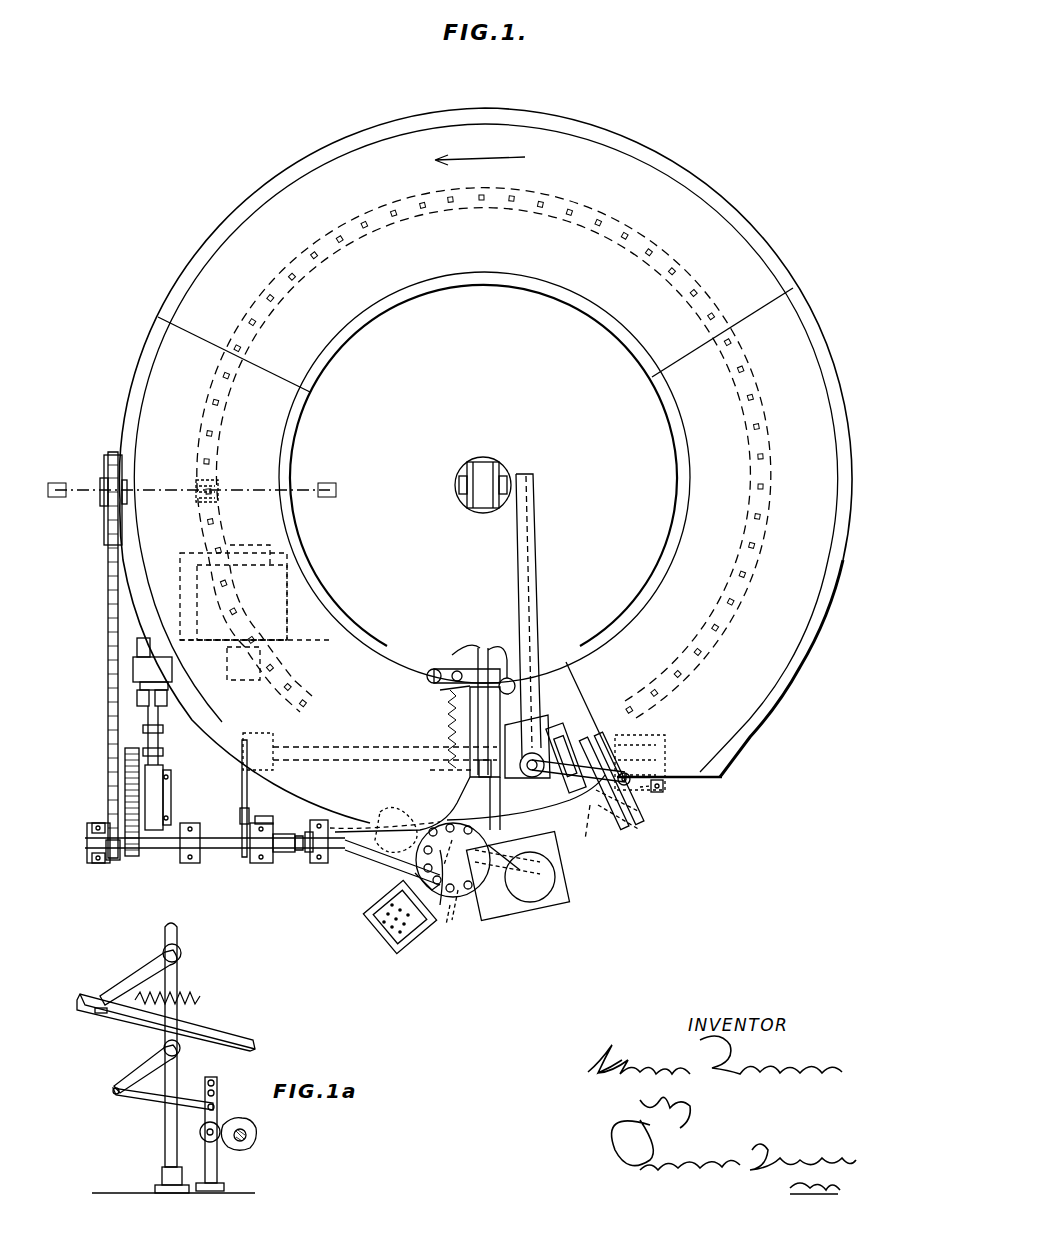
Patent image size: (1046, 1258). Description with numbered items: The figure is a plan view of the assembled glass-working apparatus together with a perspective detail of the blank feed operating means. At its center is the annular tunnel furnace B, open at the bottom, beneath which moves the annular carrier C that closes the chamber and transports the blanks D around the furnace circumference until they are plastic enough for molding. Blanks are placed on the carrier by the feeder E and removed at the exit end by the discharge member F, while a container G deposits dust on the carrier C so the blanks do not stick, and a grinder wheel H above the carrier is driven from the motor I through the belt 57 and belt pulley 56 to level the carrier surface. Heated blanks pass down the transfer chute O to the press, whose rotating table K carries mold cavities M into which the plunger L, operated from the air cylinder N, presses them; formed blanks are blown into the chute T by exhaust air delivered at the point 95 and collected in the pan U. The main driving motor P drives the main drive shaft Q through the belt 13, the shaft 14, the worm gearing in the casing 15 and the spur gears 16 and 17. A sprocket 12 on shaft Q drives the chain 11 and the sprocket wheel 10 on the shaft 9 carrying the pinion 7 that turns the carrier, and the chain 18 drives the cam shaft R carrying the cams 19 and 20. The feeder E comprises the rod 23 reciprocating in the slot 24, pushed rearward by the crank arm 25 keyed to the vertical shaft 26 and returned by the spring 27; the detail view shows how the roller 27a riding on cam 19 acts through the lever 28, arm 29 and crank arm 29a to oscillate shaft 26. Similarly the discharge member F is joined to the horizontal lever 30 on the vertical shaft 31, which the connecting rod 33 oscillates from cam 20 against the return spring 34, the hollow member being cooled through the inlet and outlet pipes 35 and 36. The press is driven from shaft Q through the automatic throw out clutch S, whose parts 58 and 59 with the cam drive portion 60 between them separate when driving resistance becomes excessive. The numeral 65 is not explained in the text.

In FIG. 1, the tunnel furnace B is at (682, 200).
In FIG. 1, the annular carrier C is at (292, 264).
In FIG. 1, the blanks D is at (247, 328).
In FIG. 1, the motor I is at (484, 477).
In FIG. 1, the belt 57 is at (535, 610).
In FIG. 1, the vertical shaft 31 is at (432, 670).
In FIG. 1, the horizontal lever 30 is at (466, 655).
In FIG. 1, the inlet pipe 35 is at (480, 650).
In FIG. 1, the outlet pipe 36 is at (507, 655).
In FIG. 1, the connecting rod 33 is at (448, 688).
In FIG. 1, the spring 34 is at (446, 714).
In FIG. 1, the cam 20 is at (428, 780).
In FIG. 1, the transfer chute O is at (458, 806).
In FIG. 1, the discharge member F is at (480, 768).
In FIG. 1, the belt pulley 56 is at (530, 778).
In FIG. 1, the grinder wheel H is at (532, 760).
In FIG. 1, the slot 24 is at (605, 742).
In FIG. 1, the container G is at (568, 745).
In FIG. 1, the crank arm 25 is at (640, 812).
In FIG. 1a, the crank arm 25 is at (140, 978).
In FIG. 1, the rod 23 is at (626, 825).
In FIG. 1a, the rod 23 is at (248, 1040).
In FIG. 1, the arm 29 is at (640, 777).
In FIG. 1a, the arm 29 is at (150, 1100).
In FIG. 1, the vertical shaft 26 is at (665, 792).
In FIG. 1a, the vertical shaft 26 is at (163, 1144).
In FIG. 1, the cam 19 is at (642, 740).
In FIG. 1a, the cam 19 is at (250, 1120).
In FIG. 1, the feeder E is at (595, 805).
In FIG. 1, the spring 27 is at (600, 838).
In FIG. 1a, the spring 27 is at (202, 998).
In FIG. 1, the rotating table K is at (465, 895).
In FIG. 1, the air cylinder N is at (535, 903).
In FIG. 1, the plunger L is at (495, 880).
In FIG. 1, the mold cavities M is at (447, 896).
In FIG. 1, the exhaust point 95 is at (440, 905).
In FIG. 1, the pan U is at (385, 940).
In FIG. 1, the chute T is at (400, 876).
In FIG. 1, the roller 65 is at (400, 815).
In FIG. 1, the chain 11 is at (107, 583).
In FIG. 1, the sprocket wheel 10 is at (104, 464).
In FIG. 1, the shaft 9 is at (192, 474).
In FIG. 1, the pinion 7 is at (215, 478).
In FIG. 1, the main driving motor P is at (287, 632).
In FIG. 1, the belt 13 is at (212, 693).
In FIG. 1, the shaft 14 is at (160, 715).
In FIG. 1, the casing 15 is at (164, 815).
In FIG. 1, the spur gear 16 is at (132, 748).
In FIG. 1, the spur gear 17 is at (132, 848).
In FIG. 1, the main drive shaft Q is at (225, 850).
In FIG. 1, the sprocket 12 is at (110, 858).
In FIG. 1, the automatic throw out clutch S is at (285, 855).
In FIG. 1, the chain 18 is at (241, 794).
In FIG. 1, the clutch part 58 is at (298, 832).
In FIG. 1, the clutch part 59 is at (315, 860).
In FIG. 1, the cam drive portion 60 is at (300, 855).
In FIG. 1, the cam shaft R is at (310, 748).
In FIG. 1a, the cam shaft R is at (247, 1137).
In FIG. 1a, the crank arm 29a is at (148, 1070).
In FIG. 1a, the lever 28 is at (213, 1080).
In FIG. 1a, the roller 27a is at (220, 1126).